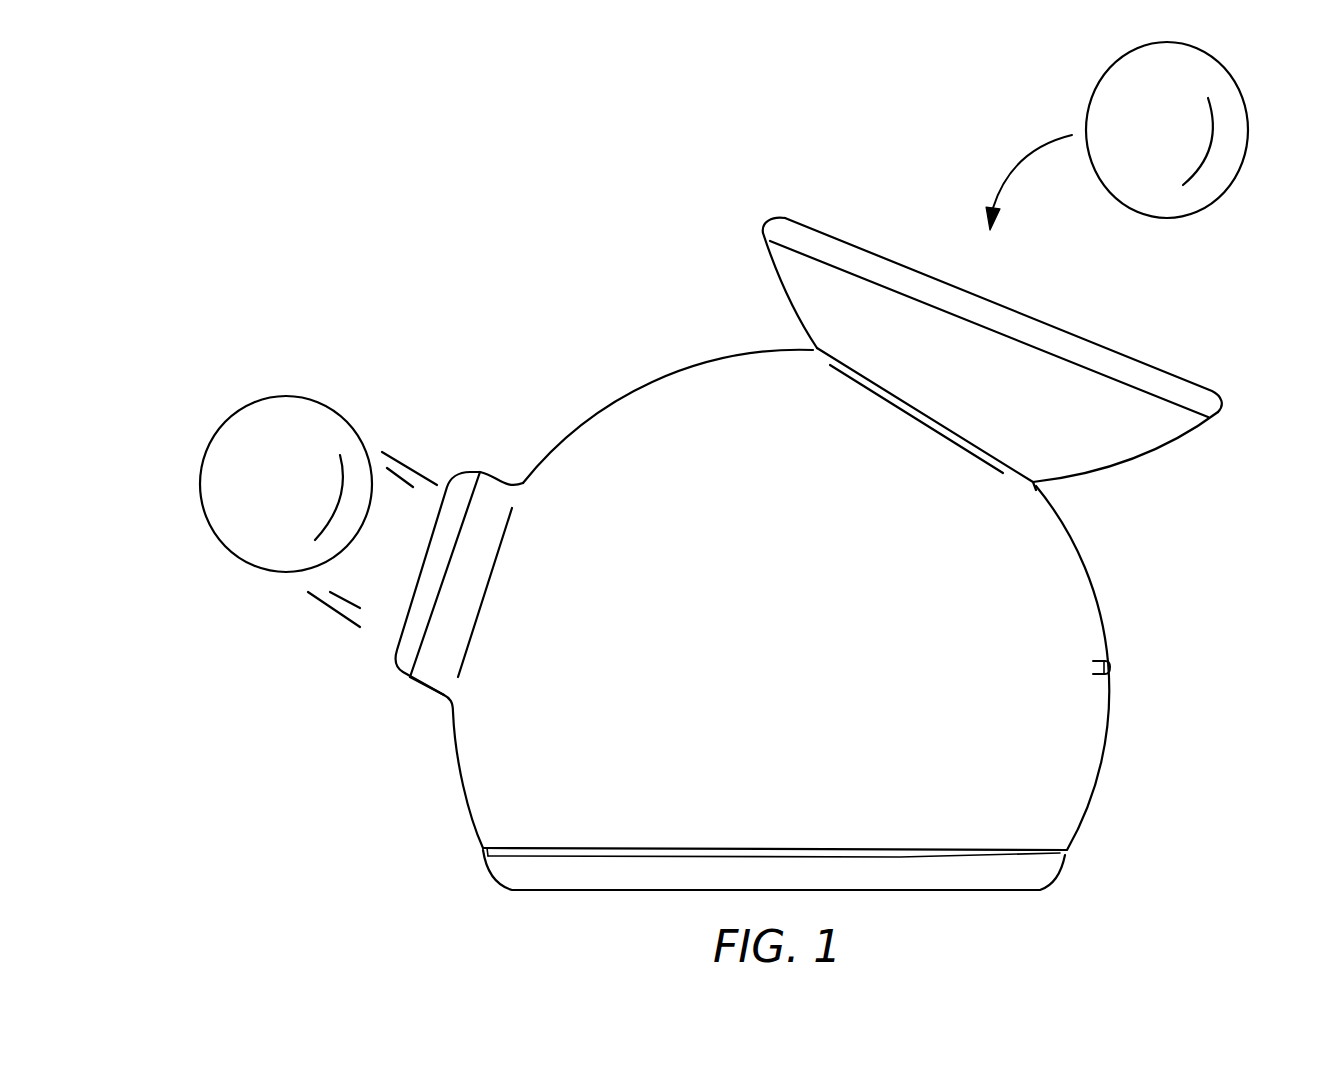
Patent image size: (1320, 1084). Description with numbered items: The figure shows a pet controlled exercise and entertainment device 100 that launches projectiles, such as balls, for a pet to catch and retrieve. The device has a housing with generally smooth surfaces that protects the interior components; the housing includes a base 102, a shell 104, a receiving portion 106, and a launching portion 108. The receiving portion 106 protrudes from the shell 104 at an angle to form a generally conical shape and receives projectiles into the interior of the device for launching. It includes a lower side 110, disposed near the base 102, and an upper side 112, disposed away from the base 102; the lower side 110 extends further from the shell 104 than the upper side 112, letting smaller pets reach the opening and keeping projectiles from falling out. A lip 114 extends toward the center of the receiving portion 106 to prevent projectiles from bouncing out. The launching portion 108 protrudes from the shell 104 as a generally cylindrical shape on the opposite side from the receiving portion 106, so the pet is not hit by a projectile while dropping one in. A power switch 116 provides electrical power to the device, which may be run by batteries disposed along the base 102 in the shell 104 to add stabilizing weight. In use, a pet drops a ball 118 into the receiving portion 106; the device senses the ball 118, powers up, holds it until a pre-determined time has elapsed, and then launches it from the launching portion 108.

The exercise and entertainment device 100 is at (560, 167).
The base 102 is at (905, 892).
The shell 104 is at (617, 390).
The receiving portion 106 is at (858, 168).
The launching portion 108 is at (412, 680).
The lower side 110 is at (1113, 466).
The upper side 112 is at (791, 303).
The lip 114 is at (765, 232).
The power switch 116 is at (1110, 663).
The ball 118 is at (1168, 218).